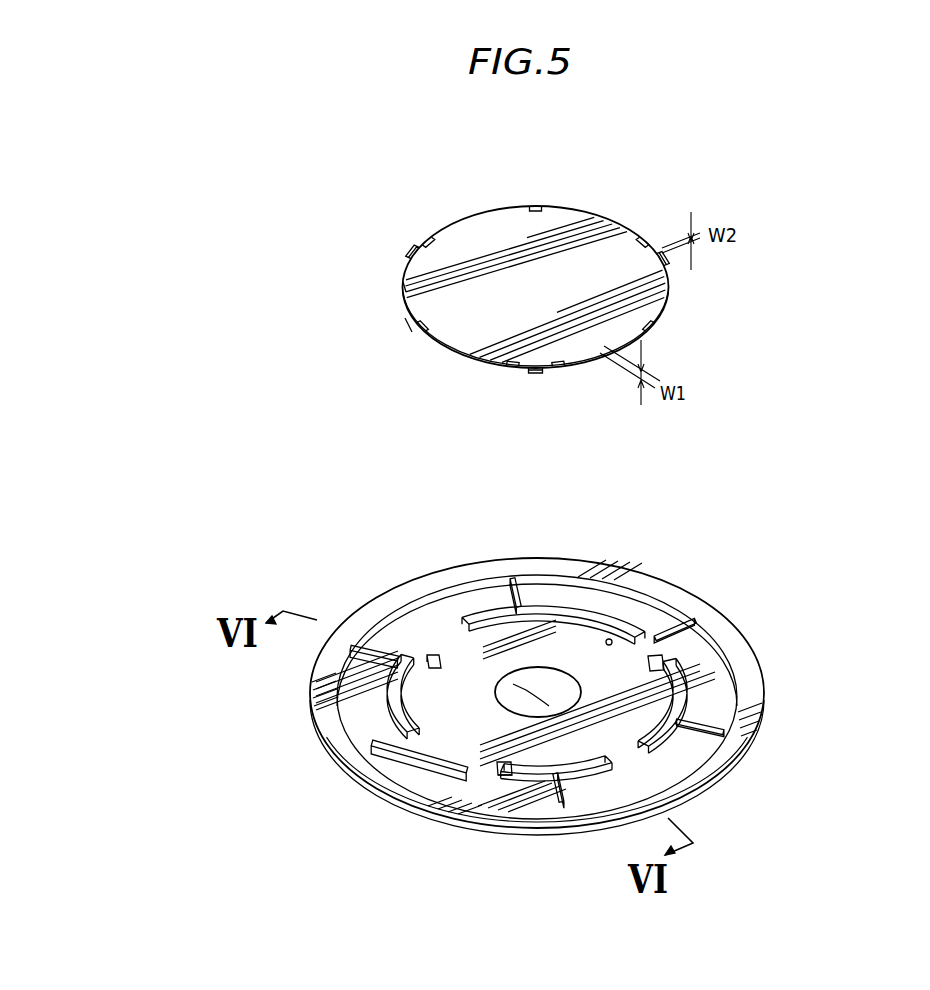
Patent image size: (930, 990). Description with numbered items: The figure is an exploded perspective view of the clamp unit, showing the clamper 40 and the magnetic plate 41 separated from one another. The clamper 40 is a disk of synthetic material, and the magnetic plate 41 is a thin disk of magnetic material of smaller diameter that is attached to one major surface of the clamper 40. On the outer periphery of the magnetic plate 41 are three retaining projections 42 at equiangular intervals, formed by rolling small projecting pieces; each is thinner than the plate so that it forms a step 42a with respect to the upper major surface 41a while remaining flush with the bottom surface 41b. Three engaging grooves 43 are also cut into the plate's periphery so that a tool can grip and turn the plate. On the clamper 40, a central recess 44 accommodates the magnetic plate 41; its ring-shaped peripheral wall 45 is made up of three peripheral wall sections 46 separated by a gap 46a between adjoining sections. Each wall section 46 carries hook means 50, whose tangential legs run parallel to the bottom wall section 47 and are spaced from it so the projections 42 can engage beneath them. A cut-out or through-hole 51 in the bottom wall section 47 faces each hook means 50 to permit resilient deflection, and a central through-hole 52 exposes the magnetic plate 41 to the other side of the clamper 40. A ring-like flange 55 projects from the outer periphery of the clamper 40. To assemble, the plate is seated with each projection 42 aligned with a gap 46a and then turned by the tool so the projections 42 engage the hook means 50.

The clamper 40 is at (748, 641).
The magnetic plate 41 is at (476, 224).
The upper major surface 41a is at (405, 280).
The bottom surface 41b is at (407, 329).
The retaining projections 42 is at (414, 250).
The step 42a is at (645, 240).
The engaging grooves 43 is at (533, 205).
The recess 44 is at (612, 640).
The peripheral wall 45 is at (650, 740).
The peripheral wall sections 46 is at (538, 612).
The gap 46a is at (466, 780).
The bottom wall section 47 is at (462, 737).
The hook means 50 is at (418, 650).
The cut-out or through-hole 51 is at (437, 668).
The through-hole 52 is at (540, 678).
The ring-like flange 55 is at (318, 733).